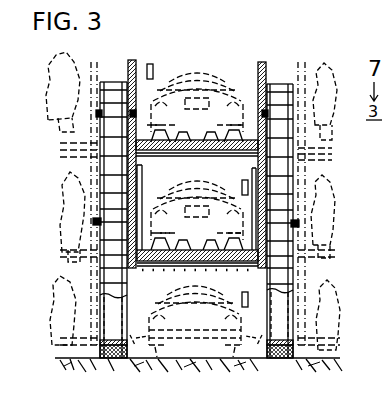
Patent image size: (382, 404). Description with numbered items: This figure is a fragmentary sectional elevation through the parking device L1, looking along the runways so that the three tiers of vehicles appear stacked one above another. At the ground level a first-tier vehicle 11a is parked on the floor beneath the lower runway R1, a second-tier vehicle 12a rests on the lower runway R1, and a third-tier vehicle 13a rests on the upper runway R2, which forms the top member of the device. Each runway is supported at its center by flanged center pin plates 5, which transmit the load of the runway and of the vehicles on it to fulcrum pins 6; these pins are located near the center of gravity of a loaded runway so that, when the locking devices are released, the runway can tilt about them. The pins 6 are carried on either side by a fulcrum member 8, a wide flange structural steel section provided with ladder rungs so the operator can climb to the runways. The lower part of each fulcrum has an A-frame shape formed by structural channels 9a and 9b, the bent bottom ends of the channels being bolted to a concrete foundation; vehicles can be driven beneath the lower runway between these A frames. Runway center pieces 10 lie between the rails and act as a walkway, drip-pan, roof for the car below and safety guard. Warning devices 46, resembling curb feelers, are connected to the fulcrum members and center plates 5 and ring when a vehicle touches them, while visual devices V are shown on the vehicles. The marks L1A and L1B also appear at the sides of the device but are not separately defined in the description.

The flanged center pin plate 5 is at (131, 60).
The fulcrum pin 6 is at (118, 110).
The fulcrum member 8 is at (102, 289).
The structural channel 9a is at (103, 309).
The structural channel 9b is at (107, 340).
The runway center piece 10 is at (196, 179).
The first tier vehicle 11a is at (195, 321).
The second tier vehicle 12a is at (197, 211).
The third tier vehicle 13a is at (203, 56).
The warning device 46 is at (130, 338).
The visual device V is at (152, 64).
The lower runway R1 is at (266, 246).
The upper runway R2 is at (266, 142).
The parking device L1 is at (128, 345).
The left level line L1A is at (64, 166).
The right level line L1B is at (328, 158).